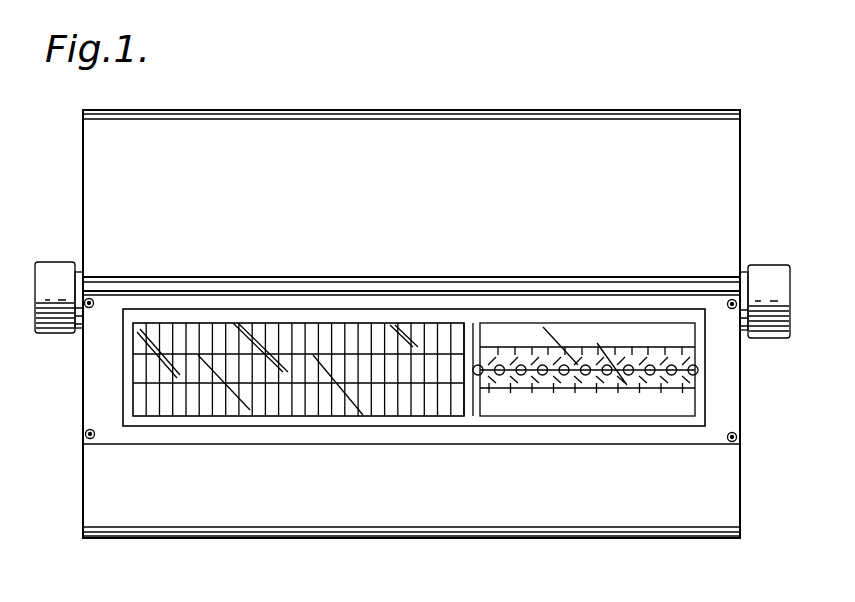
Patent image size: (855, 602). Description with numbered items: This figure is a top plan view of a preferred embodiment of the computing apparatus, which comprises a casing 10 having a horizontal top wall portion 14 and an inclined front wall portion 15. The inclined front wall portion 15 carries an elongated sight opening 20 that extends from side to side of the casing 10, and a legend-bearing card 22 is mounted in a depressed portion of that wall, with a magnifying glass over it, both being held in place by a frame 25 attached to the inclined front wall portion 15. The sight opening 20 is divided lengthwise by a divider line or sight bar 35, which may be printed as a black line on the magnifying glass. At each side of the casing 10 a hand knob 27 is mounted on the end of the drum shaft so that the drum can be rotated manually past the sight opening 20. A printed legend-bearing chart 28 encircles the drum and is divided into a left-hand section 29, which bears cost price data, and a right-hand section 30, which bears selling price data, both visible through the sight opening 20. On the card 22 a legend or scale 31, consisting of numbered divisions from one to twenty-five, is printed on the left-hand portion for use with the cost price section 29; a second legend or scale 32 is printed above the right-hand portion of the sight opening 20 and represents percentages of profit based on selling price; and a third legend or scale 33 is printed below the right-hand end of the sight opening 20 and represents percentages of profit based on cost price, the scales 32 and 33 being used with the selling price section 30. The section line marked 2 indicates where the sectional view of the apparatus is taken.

The section line 2- 2 is at (409, 183).
The casing 10 is at (717, 194).
The horizontal top wall portion 14 is at (667, 126).
The inclined front wall portion 15 is at (633, 528).
The sight opening 20 is at (133, 358).
The legend-bearing card 22 is at (218, 420).
The frame 25 is at (513, 420).
The hand knobs 27 is at (60, 333).
The legend-bearing sheet or chart 28 is at (368, 323).
The left-hand section of chart 29 is at (297, 330).
The right-hand section of chart 30 is at (563, 320).
The legend or scale 31 is at (443, 332).
The second legend or scale 32 is at (583, 340).
The third legend or scale 33 is at (680, 408).
The sight bar 35 is at (476, 365).